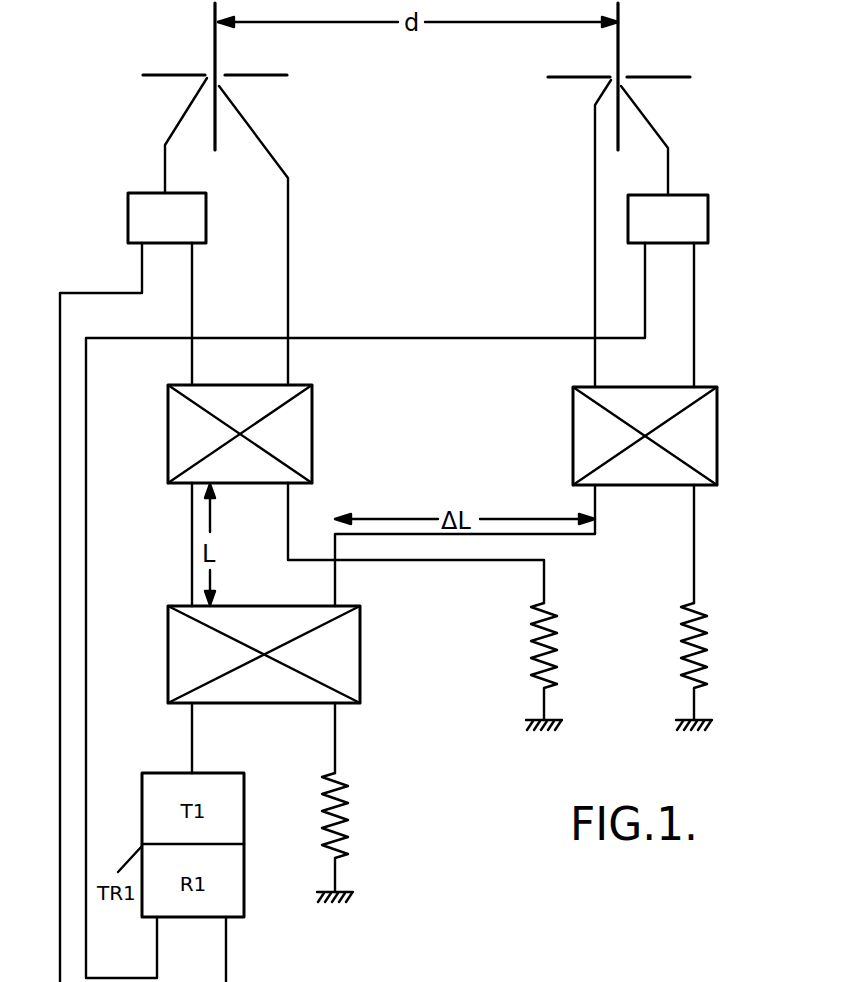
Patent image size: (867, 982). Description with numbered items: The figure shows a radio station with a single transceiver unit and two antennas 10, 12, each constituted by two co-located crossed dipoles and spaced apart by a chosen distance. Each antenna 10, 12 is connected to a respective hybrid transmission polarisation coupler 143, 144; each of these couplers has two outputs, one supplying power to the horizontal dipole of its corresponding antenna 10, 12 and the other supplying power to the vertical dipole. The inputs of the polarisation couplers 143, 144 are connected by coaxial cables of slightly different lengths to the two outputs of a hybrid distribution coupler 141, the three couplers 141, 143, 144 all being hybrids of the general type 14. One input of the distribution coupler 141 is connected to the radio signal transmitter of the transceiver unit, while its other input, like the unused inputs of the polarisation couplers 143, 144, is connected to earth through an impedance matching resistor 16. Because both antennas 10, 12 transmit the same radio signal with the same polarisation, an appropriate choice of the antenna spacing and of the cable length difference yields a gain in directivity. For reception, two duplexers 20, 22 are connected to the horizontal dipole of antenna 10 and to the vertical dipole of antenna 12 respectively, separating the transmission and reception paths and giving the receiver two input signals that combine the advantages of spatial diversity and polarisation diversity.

The antenna 10 is at (186, 66).
The antenna 12 is at (648, 58).
The duplexer 20 is at (128, 212).
The duplexer 22 is at (708, 218).
The hybrid coupler 14 is at (444, 546).
The hybrid distribution coupler 141 is at (360, 645).
The hybrid transmission polarisation coupler 143 is at (312, 427).
The hybrid transmission polarisation coupler 144 is at (573, 434).
The impedance matching resistor 16 is at (535, 662).